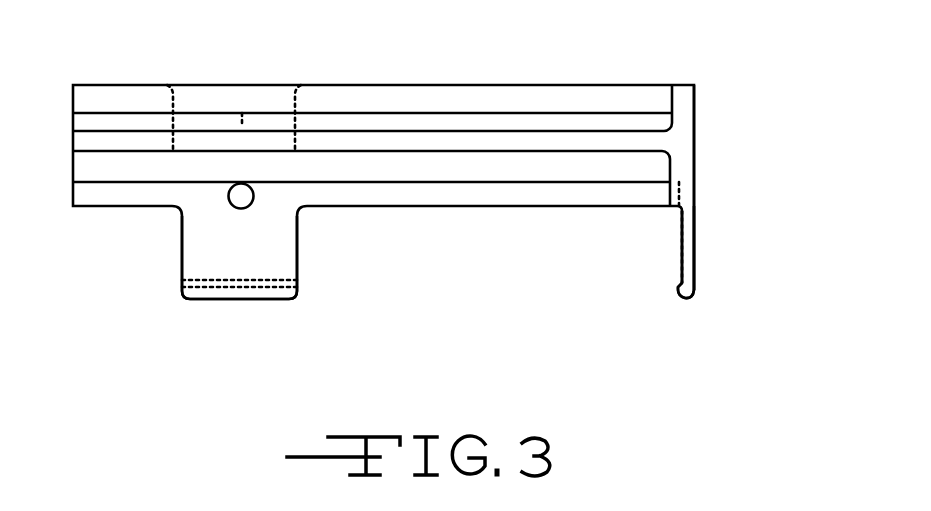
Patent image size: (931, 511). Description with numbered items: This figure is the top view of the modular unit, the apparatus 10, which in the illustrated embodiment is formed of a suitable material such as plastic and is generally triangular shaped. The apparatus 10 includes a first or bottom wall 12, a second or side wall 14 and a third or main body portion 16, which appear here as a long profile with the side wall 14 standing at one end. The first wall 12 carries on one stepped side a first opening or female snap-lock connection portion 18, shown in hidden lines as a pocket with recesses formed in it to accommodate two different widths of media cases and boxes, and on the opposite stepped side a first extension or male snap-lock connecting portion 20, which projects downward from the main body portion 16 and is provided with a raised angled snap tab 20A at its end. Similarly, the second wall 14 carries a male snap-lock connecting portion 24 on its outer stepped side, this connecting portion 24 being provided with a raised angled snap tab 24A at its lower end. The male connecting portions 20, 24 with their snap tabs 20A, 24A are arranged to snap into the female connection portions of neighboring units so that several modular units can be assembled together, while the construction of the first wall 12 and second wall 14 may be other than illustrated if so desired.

The apparatus 10 is at (677, 61).
The first wall 12 is at (435, 102).
The second wall 14 is at (687, 150).
The main body portion 16 is at (422, 138).
The first connection portion 18 is at (176, 119).
The first connecting portion 20 is at (213, 239).
The angled snap tab 20A is at (213, 287).
The first connecting portion 24 is at (689, 256).
The angled snap tab 24A is at (675, 287).